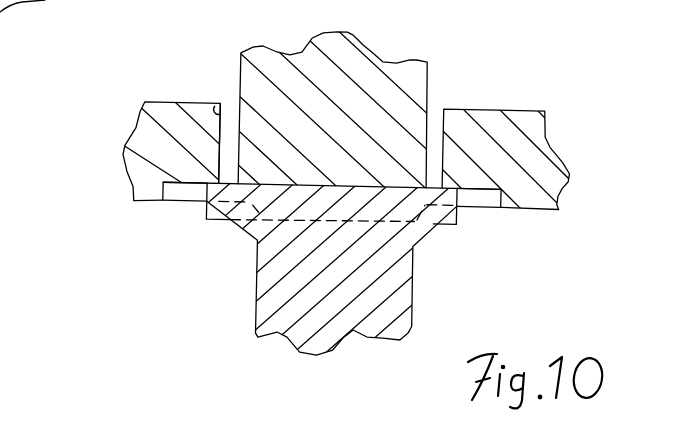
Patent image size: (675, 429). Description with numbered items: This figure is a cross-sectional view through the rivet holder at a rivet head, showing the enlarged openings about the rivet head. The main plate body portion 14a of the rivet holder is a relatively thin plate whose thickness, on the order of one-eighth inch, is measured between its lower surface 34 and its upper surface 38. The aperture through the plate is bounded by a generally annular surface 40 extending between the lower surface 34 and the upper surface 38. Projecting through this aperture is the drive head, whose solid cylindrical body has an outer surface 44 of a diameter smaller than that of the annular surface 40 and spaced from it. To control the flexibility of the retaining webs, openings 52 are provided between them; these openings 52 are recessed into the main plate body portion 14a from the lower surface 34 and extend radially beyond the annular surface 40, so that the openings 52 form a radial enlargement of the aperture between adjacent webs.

The main plate body portion 14a is at (147, 163).
The lower surface 34 is at (540, 210).
The upper surface 38 is at (490, 112).
The annular surface 40 is at (218, 107).
The outer surface 44 is at (430, 90).
The openings 52 is at (172, 196).